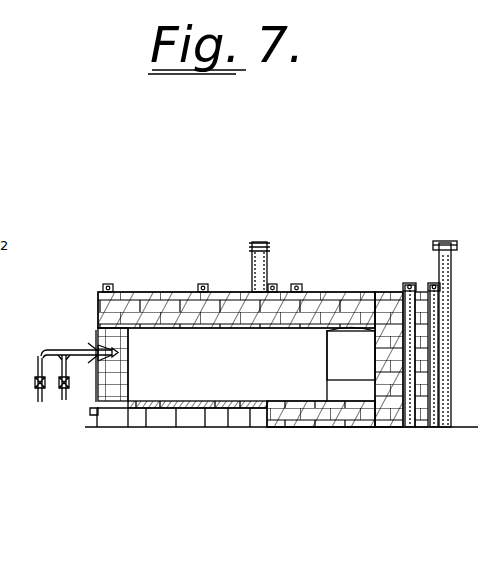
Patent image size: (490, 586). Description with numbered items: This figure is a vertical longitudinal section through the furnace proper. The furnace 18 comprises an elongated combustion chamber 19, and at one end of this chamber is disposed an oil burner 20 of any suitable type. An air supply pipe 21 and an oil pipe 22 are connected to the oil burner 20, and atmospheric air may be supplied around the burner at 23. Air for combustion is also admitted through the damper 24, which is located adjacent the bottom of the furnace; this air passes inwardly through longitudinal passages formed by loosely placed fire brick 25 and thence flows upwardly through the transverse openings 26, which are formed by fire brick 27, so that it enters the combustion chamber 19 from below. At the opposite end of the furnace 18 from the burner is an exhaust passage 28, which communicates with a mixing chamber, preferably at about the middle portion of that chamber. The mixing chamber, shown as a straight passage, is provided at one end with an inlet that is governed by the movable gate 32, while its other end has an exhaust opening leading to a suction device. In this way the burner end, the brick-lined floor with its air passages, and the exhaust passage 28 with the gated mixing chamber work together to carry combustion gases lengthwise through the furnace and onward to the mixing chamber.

The furnace 18 is at (301, 423).
The combustion chamber 19 is at (227, 364).
The oil burner 20 is at (58, 350).
The air supply pipe 21 is at (65, 398).
The oil pipe 22 is at (37, 392).
The atmospheric air supply 23 is at (86, 343).
The damper 24 is at (88, 414).
The fire brick 25 is at (169, 420).
The transverse openings 26 is at (225, 402).
The fire brick 27 is at (203, 390).
The exhaust passage 28 is at (340, 352).
The movable gate 32 is at (448, 352).